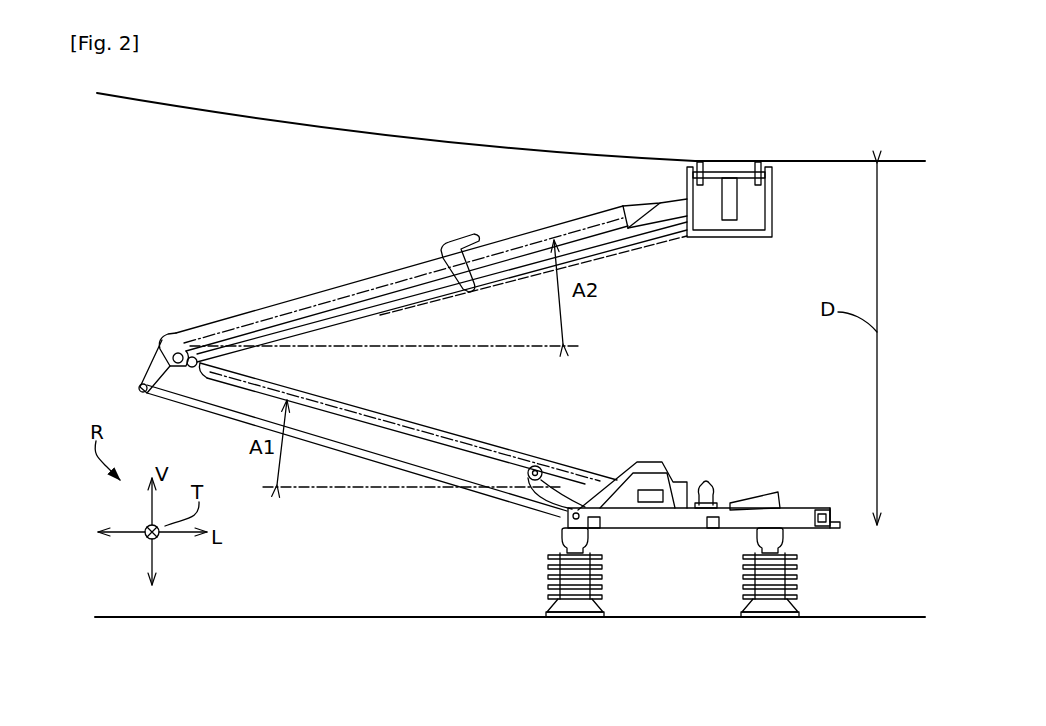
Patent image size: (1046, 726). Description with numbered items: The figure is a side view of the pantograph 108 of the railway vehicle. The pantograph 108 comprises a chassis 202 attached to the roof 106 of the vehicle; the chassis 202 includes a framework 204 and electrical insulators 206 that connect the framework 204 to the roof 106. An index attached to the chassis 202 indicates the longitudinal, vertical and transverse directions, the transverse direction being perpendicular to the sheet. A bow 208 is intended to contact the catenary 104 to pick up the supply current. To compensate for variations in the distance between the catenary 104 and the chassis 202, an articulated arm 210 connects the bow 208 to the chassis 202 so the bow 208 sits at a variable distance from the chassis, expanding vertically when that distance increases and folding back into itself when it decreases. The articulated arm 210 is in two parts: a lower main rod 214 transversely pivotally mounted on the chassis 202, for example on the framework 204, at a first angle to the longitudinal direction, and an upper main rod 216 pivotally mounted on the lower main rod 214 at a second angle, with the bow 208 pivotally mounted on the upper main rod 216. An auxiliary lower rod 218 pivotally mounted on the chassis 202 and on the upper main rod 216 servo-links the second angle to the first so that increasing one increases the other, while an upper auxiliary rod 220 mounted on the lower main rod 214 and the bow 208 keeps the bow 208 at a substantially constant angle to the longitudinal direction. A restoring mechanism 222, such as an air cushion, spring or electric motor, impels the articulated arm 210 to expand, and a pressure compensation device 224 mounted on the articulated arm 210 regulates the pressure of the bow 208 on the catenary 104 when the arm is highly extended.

The catenary 104 is at (608, 154).
The roof 106 is at (332, 616).
The pantograph 108 is at (268, 208).
The chassis 202 is at (801, 487).
The framework 204 is at (832, 528).
The electrical insulators 206 is at (548, 575).
The bow 208 is at (773, 200).
The articulated arm 210 is at (215, 293).
The lower main rod 214 is at (455, 430).
The upper main rod 216 is at (363, 290).
The auxiliary lower rod 218 is at (363, 460).
The upper auxiliary rod 220 is at (350, 322).
The restoring mechanism 222 is at (630, 454).
The pressure compensation device 224 is at (445, 226).